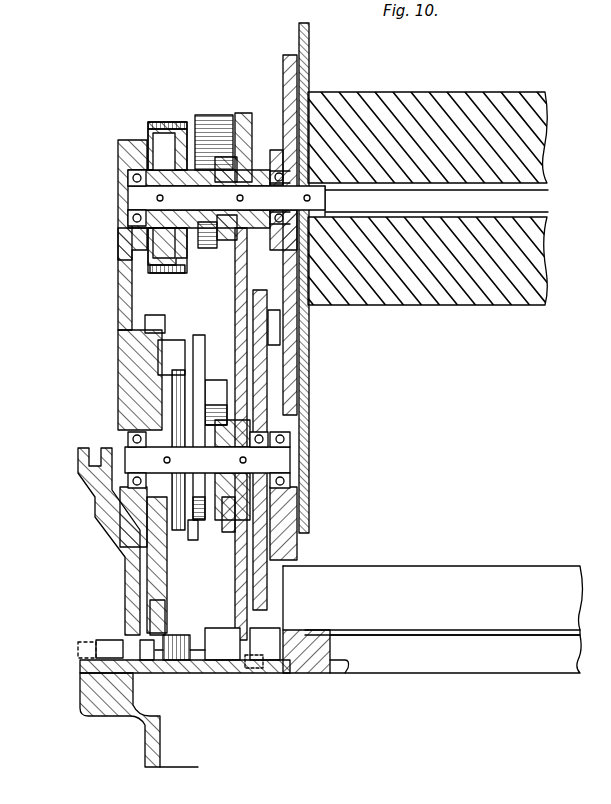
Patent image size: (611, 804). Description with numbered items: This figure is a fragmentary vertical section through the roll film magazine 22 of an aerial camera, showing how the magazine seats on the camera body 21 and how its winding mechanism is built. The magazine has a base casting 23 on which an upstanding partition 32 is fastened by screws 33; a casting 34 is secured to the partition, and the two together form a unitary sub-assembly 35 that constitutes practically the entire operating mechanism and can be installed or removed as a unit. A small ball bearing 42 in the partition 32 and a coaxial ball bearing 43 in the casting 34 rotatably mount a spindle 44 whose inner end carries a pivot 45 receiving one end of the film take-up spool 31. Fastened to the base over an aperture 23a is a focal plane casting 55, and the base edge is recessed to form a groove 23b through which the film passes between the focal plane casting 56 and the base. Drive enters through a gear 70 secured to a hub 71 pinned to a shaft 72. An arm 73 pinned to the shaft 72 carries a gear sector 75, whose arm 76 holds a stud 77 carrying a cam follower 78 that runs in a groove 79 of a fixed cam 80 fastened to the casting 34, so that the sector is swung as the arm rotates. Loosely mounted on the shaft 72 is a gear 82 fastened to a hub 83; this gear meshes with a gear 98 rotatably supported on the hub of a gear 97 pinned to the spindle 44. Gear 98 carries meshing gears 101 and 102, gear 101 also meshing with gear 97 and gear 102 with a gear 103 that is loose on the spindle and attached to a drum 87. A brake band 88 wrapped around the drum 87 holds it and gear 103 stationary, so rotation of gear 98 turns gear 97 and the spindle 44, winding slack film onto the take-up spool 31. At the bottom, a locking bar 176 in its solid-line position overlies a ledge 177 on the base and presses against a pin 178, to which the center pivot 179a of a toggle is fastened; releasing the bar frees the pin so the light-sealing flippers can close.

The body 21 is at (133, 734).
The roll film magazine 22 is at (85, 550).
The base casting 23 is at (312, 668).
The aperture 23a is at (350, 665).
The groove 23b is at (320, 632).
The film take-up spool 31 is at (498, 100).
The partition 32 is at (298, 60).
The screws 33 is at (248, 668).
The casting 34 is at (120, 275).
The sub-assembly 35 is at (169, 94).
The ball bearing 42 is at (277, 165).
The ball bearing 43 is at (128, 176).
The spindle 44 is at (130, 196).
The pivot 45 is at (330, 190).
The focal plane casting 55 is at (467, 554).
The focal plane casting 56 is at (456, 630).
The gear 70 is at (274, 340).
The hub 71 is at (258, 438).
The shaft 72 is at (280, 460).
The arm 73 is at (192, 528).
The gear sector 75 is at (212, 525).
The arm 76 is at (210, 352).
The stud 77 is at (184, 340).
The cam follower 78 is at (168, 340).
The groove 79 is at (148, 318).
The fixed cam 80 is at (150, 380).
The gear 82 is at (232, 555).
The hub 83 is at (210, 503).
The drum 87 is at (148, 130).
The brake band 88 is at (155, 122).
The gear 97 is at (215, 150).
The gear 98 is at (241, 118).
The gear 101 is at (218, 165).
The gear 102 is at (208, 249).
The gear 103 is at (195, 170).
The locking bar 176 is at (106, 640).
The ledge 177 is at (140, 661).
The pin 178 is at (152, 662).
The center pivot 179a is at (200, 660).